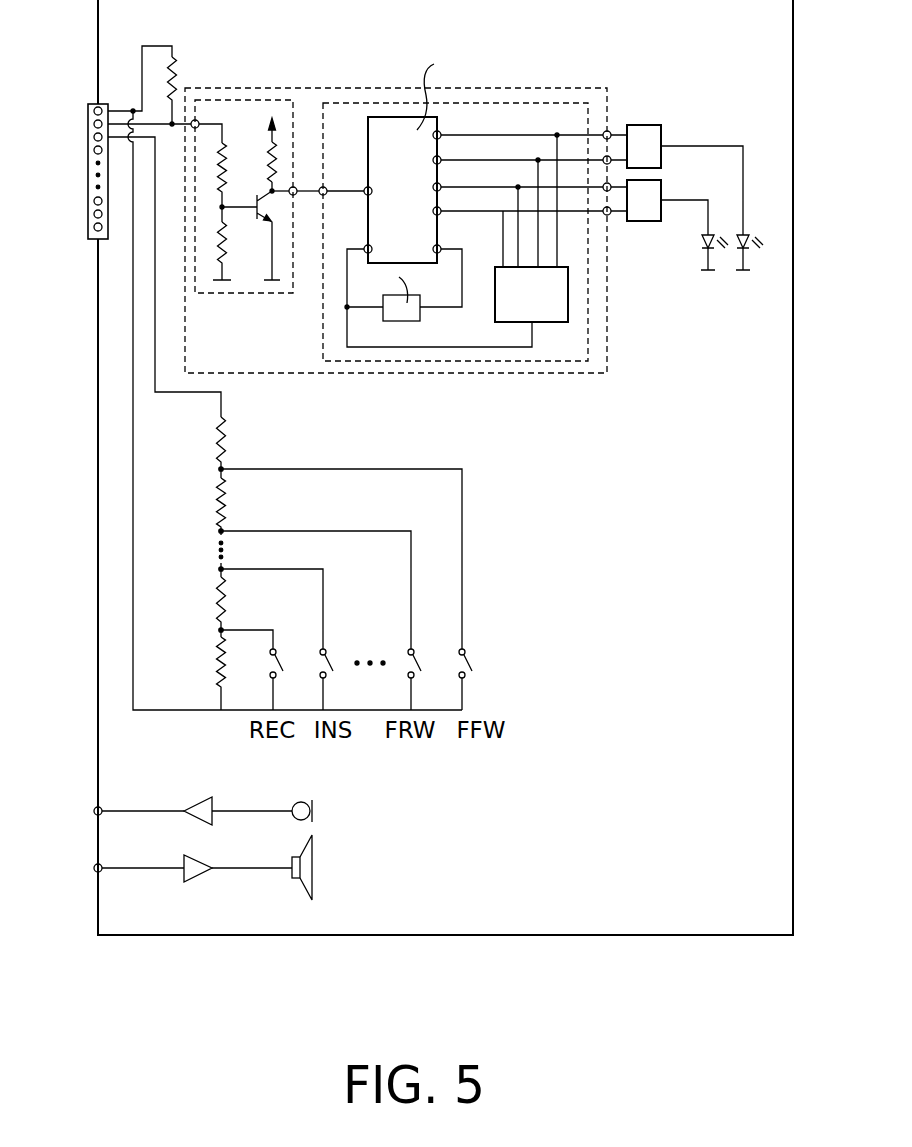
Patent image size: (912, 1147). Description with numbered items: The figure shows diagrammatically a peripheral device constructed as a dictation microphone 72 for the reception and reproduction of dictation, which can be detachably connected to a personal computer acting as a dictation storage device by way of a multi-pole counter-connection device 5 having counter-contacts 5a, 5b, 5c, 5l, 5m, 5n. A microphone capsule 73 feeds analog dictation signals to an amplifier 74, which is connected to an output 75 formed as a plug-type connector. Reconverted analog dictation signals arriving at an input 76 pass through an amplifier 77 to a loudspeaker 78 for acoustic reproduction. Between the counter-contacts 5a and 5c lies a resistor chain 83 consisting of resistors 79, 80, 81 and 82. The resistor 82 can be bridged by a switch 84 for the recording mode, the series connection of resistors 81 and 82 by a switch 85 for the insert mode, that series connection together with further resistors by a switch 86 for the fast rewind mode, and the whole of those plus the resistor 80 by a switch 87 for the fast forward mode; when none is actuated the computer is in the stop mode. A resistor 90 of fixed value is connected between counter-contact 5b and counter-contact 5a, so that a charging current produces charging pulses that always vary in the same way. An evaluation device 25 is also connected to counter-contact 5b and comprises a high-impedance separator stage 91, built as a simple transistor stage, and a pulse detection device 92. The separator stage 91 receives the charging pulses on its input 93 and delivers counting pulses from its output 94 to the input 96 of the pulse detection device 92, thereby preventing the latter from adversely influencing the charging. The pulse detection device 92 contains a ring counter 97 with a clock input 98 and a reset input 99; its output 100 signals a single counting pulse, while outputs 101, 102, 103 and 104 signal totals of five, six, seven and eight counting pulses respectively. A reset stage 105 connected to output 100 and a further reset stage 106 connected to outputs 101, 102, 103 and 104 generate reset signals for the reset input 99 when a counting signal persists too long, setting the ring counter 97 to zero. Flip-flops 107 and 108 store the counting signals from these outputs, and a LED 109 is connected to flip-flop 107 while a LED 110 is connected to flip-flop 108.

The counter-connection device 5 is at (86, 241).
The counter-contact 5a is at (94, 110).
The counter-contact 5b is at (94, 124).
The counter-contact 5c is at (94, 138).
The counter-contact 5l is at (94, 200).
The counter-contact 5m is at (94, 214).
The counter-contact 5n is at (94, 228).
The evaluation device 25 is at (608, 88).
The dictation microphone 72 is at (550, 940).
The microphone capsule 73 is at (314, 808).
The amplifier 74 is at (212, 797).
The output 75 is at (94, 808).
The input 76 is at (94, 872).
The amplifier 77 is at (200, 870).
The loudspeaker 78 is at (316, 876).
The resistor 79 is at (207, 440).
The resistor 80 is at (208, 504).
The resistor 81 is at (208, 602).
The resistor 82 is at (210, 663).
The resistor chain 83 is at (310, 550).
The switch 84 is at (279, 655).
The switch 85 is at (329, 655).
The switch 86 is at (418, 656).
The switch 87 is at (469, 656).
The resistor of fixed value 90 is at (178, 57).
The separator stage 91 is at (262, 98).
The pulse detection device 92 is at (518, 101).
The input 93 is at (198, 120).
The output 94 is at (295, 196).
The input 96 is at (322, 187).
The ring counter 97 is at (395, 117).
The clock input 98 is at (365, 188).
The reset input 99 is at (365, 246).
The output 100 is at (433, 249).
The output 101 is at (433, 211).
The output 102 is at (433, 187).
The output 103 is at (433, 160).
The output 104 is at (433, 135).
The reset stage 105 is at (417, 315).
The reset stage 106 is at (550, 310).
The flip-flop 107 is at (652, 213).
The flip-flop 108 is at (640, 130).
The LED 109 is at (707, 250).
The LED 110 is at (745, 250).